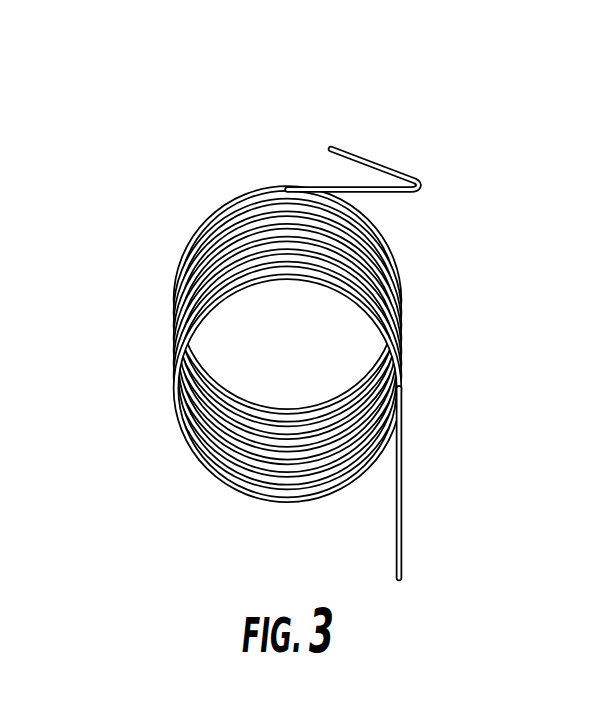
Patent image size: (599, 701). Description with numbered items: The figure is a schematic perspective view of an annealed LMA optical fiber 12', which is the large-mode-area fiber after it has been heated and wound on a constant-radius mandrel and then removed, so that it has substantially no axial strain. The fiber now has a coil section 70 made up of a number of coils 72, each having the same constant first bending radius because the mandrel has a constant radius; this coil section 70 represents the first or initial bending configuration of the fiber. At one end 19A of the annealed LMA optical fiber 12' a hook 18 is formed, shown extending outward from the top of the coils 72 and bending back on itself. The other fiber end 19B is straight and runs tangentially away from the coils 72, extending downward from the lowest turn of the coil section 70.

The annealed LMA optical fiber 12' is at (287, 295).
The hook 18 is at (401, 162).
The one end 19A is at (402, 194).
The other fiber end 19B is at (400, 533).
The coil section 70 is at (230, 348).
The coils 72 is at (213, 472).